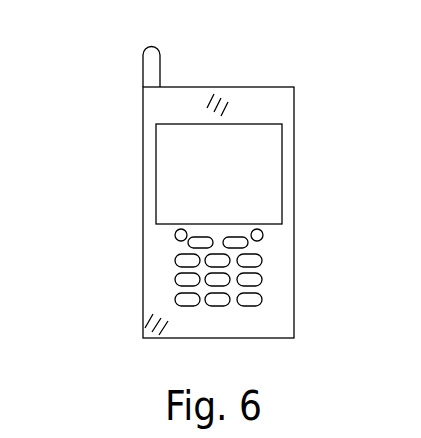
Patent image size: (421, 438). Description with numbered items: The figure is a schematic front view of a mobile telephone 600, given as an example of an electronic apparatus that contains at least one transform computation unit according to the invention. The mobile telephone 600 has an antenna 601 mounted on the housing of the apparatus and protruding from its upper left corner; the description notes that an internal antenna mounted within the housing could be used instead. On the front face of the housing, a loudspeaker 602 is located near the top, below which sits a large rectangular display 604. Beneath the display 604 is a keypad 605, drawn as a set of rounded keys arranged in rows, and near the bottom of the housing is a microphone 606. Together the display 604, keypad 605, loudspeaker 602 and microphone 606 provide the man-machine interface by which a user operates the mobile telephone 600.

The mobile telephone 600 is at (70, 108).
The antenna 601 is at (143, 73).
The loudspeaker 602 is at (212, 93).
The display 604 is at (156, 156).
The keypad 605 is at (175, 281).
The microphone 606 is at (143, 322).